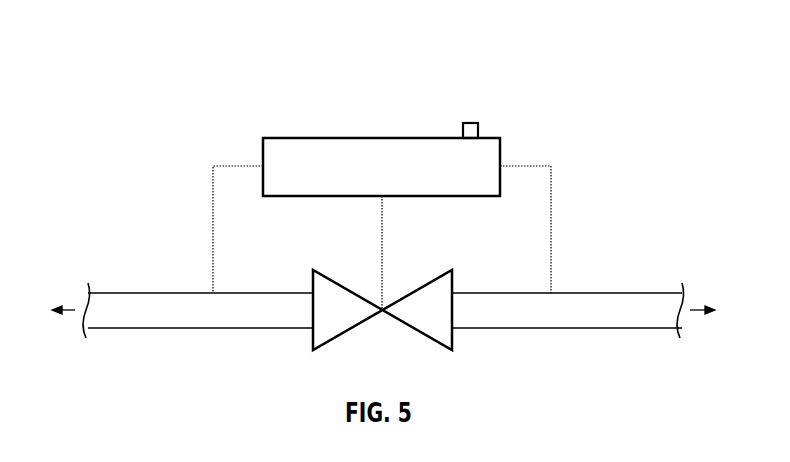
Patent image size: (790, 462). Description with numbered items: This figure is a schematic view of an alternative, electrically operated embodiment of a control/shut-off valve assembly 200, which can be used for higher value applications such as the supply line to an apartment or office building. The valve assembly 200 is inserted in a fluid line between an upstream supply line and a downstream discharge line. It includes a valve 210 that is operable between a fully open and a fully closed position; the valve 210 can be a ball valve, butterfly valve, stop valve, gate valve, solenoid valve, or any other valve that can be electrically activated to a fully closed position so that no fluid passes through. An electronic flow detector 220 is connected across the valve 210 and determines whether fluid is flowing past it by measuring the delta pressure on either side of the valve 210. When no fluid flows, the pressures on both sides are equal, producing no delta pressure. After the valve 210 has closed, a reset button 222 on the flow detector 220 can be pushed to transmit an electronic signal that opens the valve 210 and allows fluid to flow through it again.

The valve assembly 200 is at (166, 40).
The valve 210 is at (423, 335).
The electronic flow detector 220 is at (318, 137).
The reset button 222 is at (473, 122).